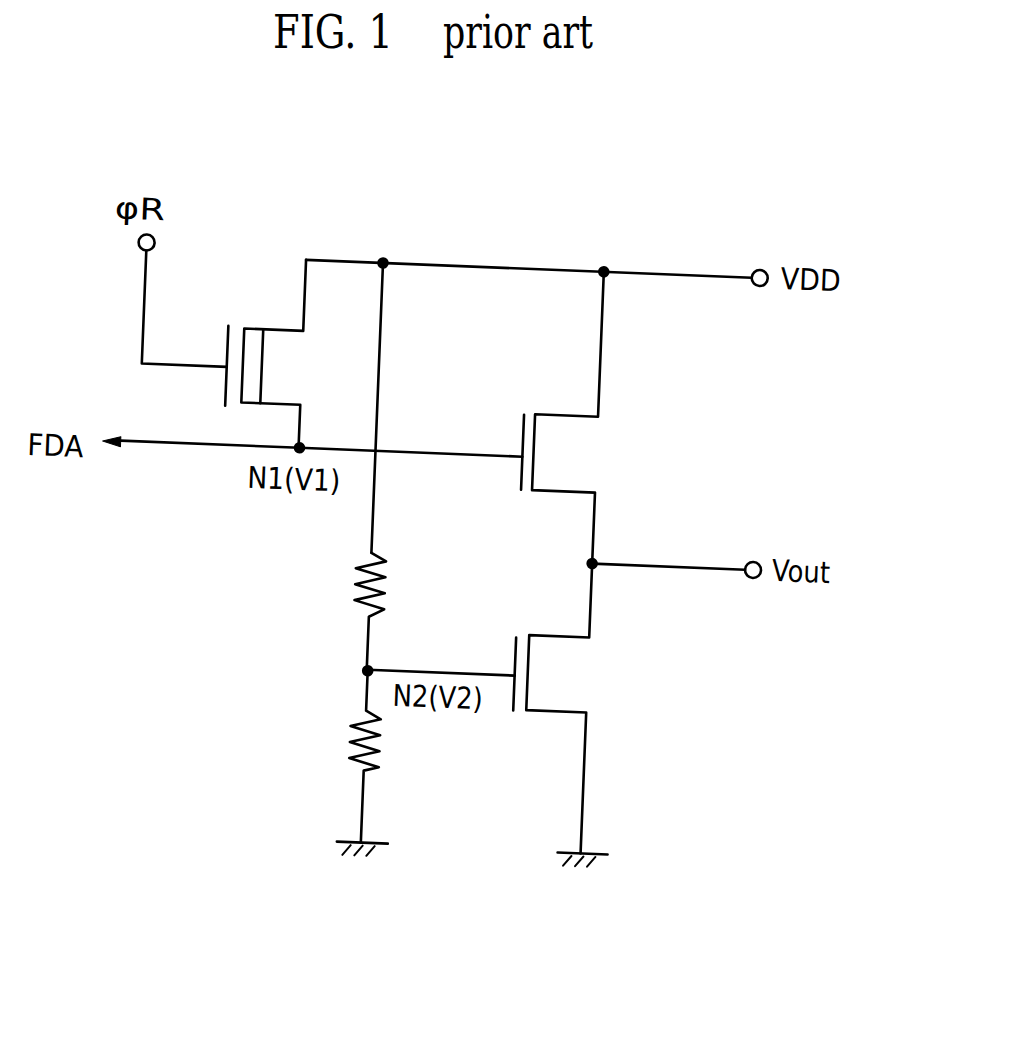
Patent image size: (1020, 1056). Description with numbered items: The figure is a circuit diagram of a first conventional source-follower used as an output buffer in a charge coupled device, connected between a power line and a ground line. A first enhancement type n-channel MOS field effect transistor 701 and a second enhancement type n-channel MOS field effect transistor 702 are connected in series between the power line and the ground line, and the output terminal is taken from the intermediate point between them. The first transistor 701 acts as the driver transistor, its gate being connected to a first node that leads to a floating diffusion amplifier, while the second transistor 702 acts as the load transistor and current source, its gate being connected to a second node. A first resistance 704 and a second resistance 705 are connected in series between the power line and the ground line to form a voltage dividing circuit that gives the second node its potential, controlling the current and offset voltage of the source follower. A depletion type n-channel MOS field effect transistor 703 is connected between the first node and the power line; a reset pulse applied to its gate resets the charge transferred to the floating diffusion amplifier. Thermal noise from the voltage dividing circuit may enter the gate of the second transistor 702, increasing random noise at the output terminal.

The first enhancement type n-channel MOS field effect transistor 701 is at (587, 417).
The second enhancement type n-channel MOS field effect transistor 702 is at (510, 705).
The depletion type n-channel MOS field effect transistor 703 is at (284, 353).
The first resistance 704 is at (339, 611).
The second resistance 705 is at (337, 755).